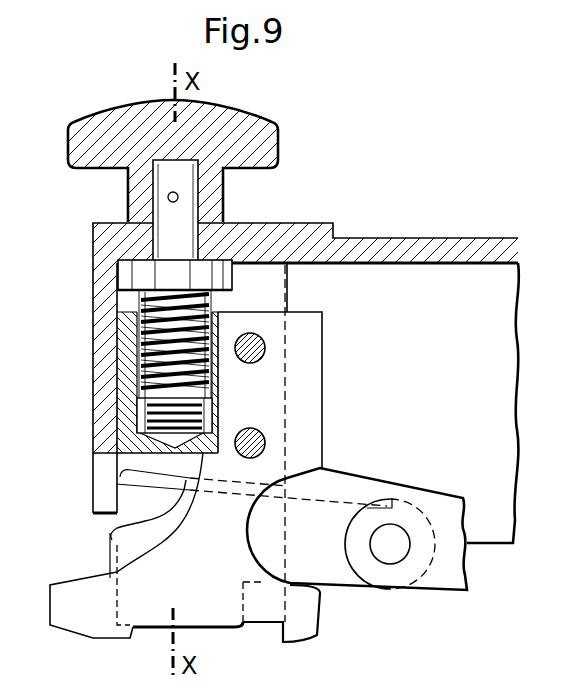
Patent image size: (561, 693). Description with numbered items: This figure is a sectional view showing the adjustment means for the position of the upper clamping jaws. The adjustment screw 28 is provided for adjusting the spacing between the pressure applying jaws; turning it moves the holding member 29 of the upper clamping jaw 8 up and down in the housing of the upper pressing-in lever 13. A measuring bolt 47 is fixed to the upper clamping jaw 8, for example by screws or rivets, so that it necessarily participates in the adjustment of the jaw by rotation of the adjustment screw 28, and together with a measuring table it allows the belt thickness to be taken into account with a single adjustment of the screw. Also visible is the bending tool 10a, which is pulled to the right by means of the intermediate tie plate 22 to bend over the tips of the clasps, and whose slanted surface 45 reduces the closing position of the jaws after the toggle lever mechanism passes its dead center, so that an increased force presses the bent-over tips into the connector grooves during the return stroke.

The upper clamping jaw 8 is at (73, 620).
The bending tool 10a is at (137, 540).
The upper hand lever tie plate 13 is at (436, 270).
The intermediate tie plate 22 is at (435, 580).
The adjustment screw 28 is at (188, 210).
The holding member 29 is at (112, 347).
The slanted surface 45 is at (128, 476).
The measuring bolt 47 is at (265, 348).